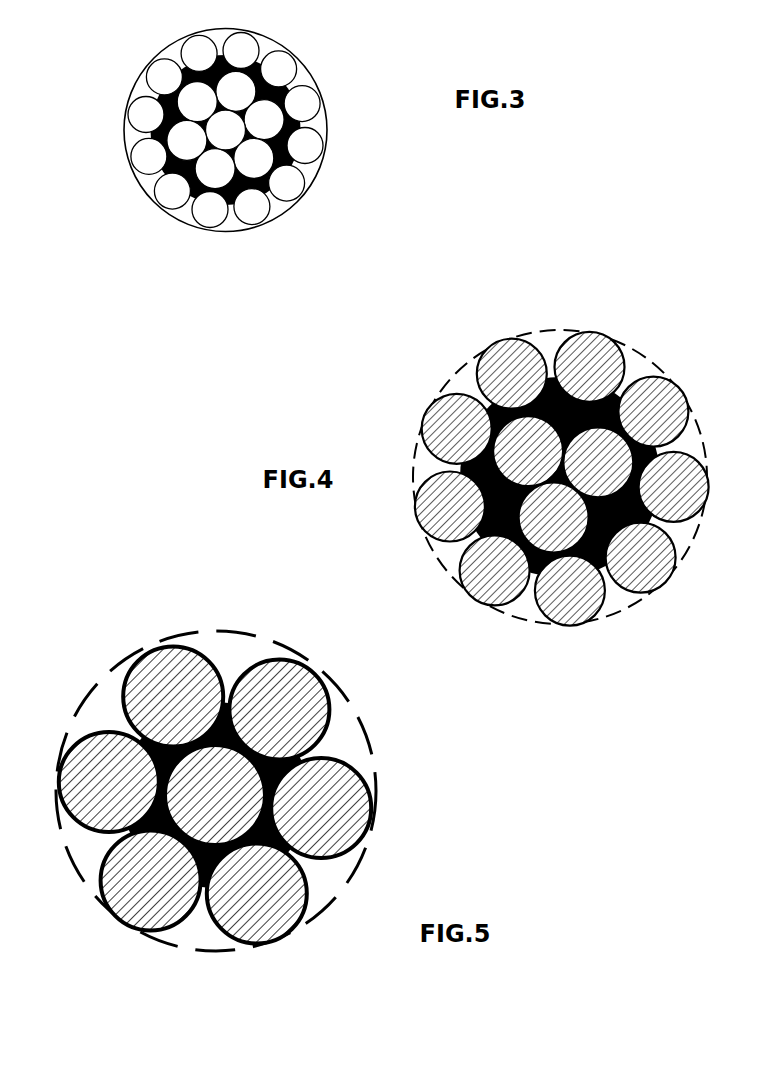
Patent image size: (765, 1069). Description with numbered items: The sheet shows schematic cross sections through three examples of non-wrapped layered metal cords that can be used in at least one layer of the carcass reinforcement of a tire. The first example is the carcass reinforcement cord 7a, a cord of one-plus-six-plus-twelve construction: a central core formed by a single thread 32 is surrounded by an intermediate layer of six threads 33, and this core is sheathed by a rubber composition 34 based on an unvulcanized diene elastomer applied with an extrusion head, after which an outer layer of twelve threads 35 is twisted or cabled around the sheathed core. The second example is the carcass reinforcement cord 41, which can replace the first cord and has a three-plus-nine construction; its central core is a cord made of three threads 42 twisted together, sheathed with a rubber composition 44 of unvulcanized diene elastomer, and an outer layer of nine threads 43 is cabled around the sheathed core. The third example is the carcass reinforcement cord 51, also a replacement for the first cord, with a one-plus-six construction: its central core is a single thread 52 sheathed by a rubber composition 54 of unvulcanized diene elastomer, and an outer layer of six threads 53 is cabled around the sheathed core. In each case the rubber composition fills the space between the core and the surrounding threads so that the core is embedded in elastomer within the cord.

In FIG. 3, the carcass reinforcement cord 7a is at (314, 58).
In FIG. 3, the thread 32 is at (218, 128).
In FIG. 3, the threads 33 is at (185, 153).
In FIG. 3, the rubber composition 34 is at (287, 140).
In FIG. 3, the threads 35 is at (262, 217).
In FIG. 4, the carcass reinforcement cord 41 is at (383, 443).
In FIG. 4, the threads 42 is at (650, 393).
In FIG. 4, the threads 43 is at (563, 370).
In FIG. 4, the rubber composition 44 is at (483, 499).
In FIG. 5, the carcass reinforcement cord 51 is at (140, 630).
In FIG. 5, the thread 52 is at (185, 838).
In FIG. 5, the threads 53 is at (108, 745).
In FIG. 5, the rubber composition 54 is at (108, 898).